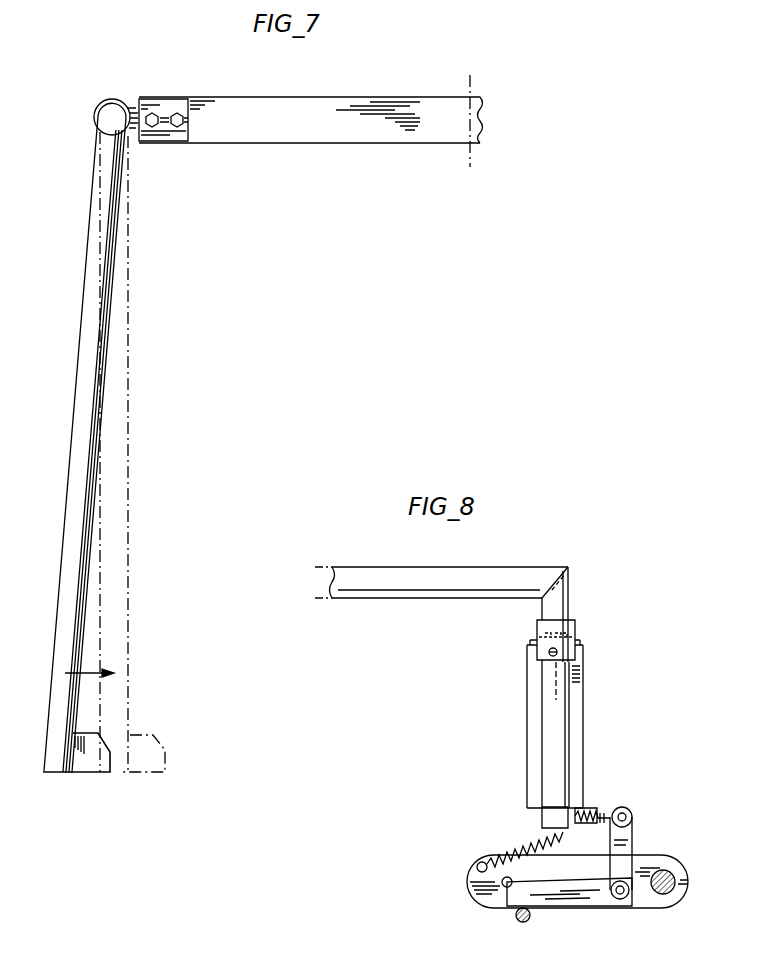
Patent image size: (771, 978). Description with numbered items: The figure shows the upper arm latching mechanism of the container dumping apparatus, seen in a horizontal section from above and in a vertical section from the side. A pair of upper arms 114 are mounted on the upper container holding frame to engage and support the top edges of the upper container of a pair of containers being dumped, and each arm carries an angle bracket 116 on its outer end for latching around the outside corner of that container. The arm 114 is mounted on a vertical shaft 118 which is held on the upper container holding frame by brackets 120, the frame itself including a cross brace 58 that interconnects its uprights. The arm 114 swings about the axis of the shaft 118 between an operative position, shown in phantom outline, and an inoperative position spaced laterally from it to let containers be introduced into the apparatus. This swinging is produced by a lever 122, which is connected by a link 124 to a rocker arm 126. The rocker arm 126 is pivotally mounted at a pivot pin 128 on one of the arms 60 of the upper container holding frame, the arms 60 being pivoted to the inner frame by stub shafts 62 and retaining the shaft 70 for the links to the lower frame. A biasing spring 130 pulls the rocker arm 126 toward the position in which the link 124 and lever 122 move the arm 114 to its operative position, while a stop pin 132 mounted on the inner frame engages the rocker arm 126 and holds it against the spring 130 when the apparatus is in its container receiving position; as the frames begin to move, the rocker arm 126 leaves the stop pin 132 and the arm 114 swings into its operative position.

In FIG. 7, the cross brace 58 is at (290, 132).
In FIG. 8, the arms 60 is at (488, 897).
In FIG. 8, the stub shafts 62 is at (655, 858).
In FIG. 8, the shaft 70 is at (467, 884).
In FIG. 7, the upper arms 114 is at (78, 482).
In FIG. 8, the upper arms 114 is at (362, 578).
In FIG. 7, the angle brackets 116 is at (91, 766).
In FIG. 8, the vertical shafts 118 is at (555, 717).
In FIG. 7, the brackets 120 is at (115, 104).
In FIG. 8, the brackets 120 is at (576, 626).
In FIG. 8, the levers 122 is at (541, 826).
In FIG. 8, the links 124 is at (584, 810).
In FIG. 8, the rocker arms 126 is at (589, 896).
In FIG. 8, the pivot pins 128 is at (628, 898).
In FIG. 8, the biasing spring 130 is at (528, 845).
In FIG. 8, the stop pin 132 is at (522, 922).